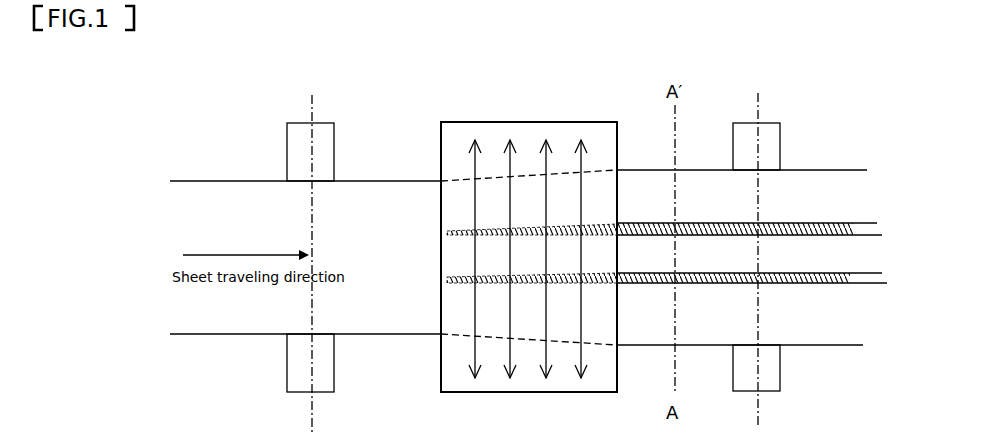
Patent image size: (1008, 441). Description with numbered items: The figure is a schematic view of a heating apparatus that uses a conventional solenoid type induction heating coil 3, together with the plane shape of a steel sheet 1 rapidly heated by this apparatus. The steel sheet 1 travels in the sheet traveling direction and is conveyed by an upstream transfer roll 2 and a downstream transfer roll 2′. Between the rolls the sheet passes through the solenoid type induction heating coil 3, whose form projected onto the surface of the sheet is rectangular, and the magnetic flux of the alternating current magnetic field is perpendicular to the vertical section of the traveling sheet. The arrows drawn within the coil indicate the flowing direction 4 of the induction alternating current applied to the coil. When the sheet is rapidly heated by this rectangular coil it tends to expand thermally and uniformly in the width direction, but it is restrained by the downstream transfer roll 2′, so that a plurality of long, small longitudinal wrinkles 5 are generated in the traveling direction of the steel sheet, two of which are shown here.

The steel sheet 1 is at (213, 207).
The transfer roll 2 is at (297, 148).
The transfer roll 2′ is at (766, 135).
The solenoid type induction heating coil 3 is at (520, 128).
The flowing direction of an induction alternating current 4 is at (472, 256).
The longitudinal wrinkles 5 is at (813, 278).